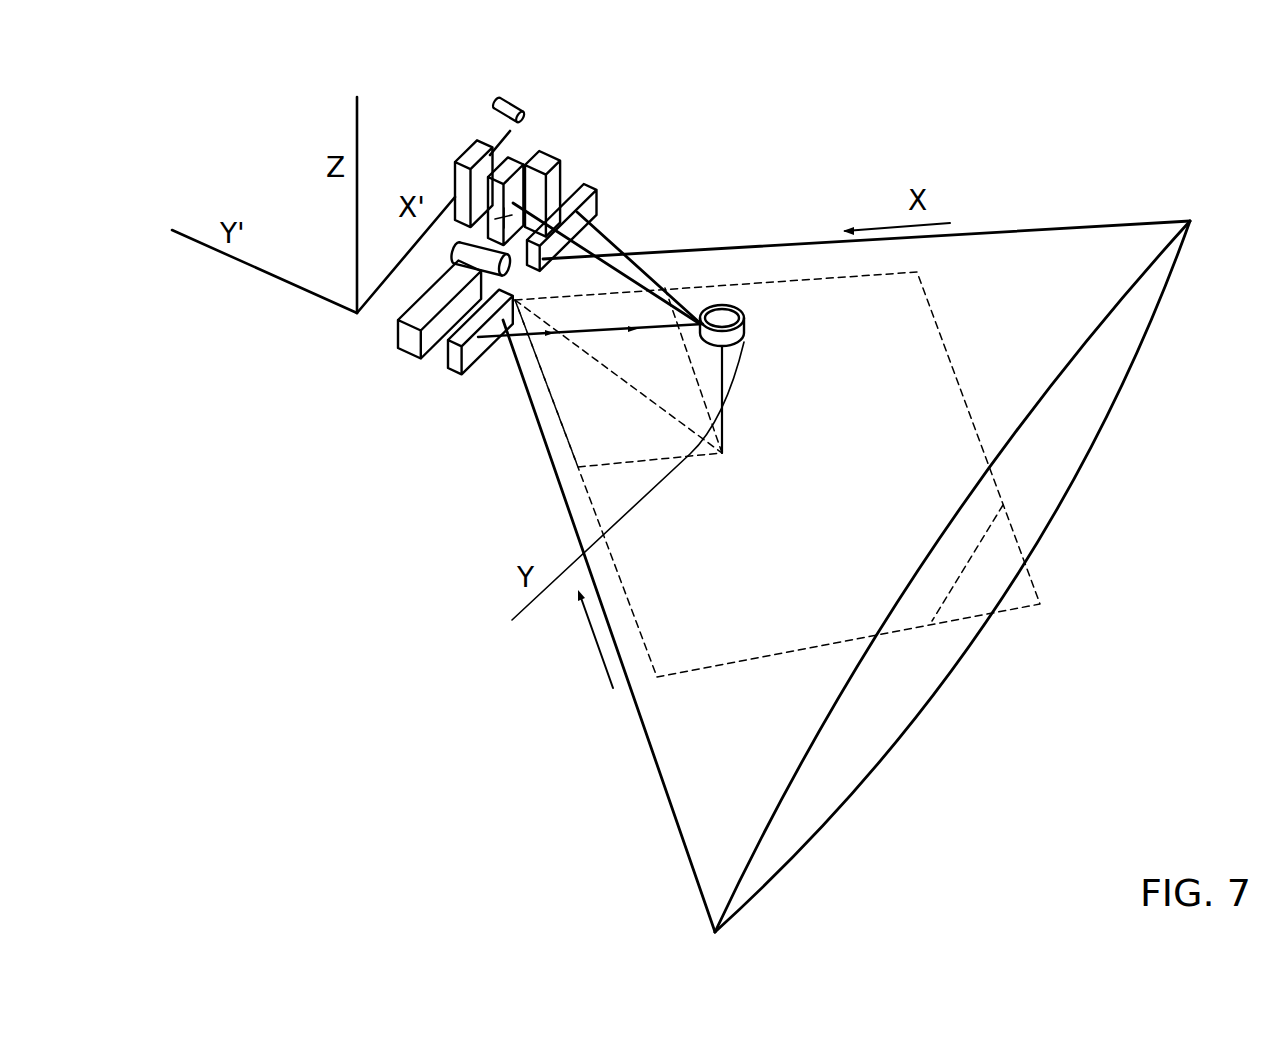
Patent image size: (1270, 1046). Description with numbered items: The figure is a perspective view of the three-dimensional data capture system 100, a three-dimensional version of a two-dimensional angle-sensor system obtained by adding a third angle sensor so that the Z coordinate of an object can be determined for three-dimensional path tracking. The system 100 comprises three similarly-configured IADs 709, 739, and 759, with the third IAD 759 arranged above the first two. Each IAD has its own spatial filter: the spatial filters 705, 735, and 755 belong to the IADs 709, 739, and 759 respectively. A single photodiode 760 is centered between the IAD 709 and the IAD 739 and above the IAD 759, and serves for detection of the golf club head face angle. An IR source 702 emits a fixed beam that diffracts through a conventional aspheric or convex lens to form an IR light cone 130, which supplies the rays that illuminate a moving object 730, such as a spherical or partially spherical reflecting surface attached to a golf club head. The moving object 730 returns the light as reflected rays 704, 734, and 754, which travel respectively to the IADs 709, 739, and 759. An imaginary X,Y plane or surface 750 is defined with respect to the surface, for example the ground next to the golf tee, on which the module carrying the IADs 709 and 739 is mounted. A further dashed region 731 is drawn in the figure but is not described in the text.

The 3D data capture system 100 is at (470, 811).
The IR light cone 130 is at (1107, 388).
The IR source 702 is at (452, 246).
The reflected ray 704 is at (592, 336).
The spatial filter 705 is at (468, 370).
The IAD 709 is at (408, 337).
The moving object 730 is at (602, 490).
The scan region 731 is at (637, 393).
The reflected ray 734 is at (690, 308).
The spatial filter 735 is at (595, 204).
The IAD 739 is at (553, 152).
The X,Y plane 750 is at (973, 565).
The reflected ray 754 is at (643, 252).
The spatial filter 755 is at (513, 158).
The IAD 759 is at (468, 158).
The photodiode 760 is at (488, 107).